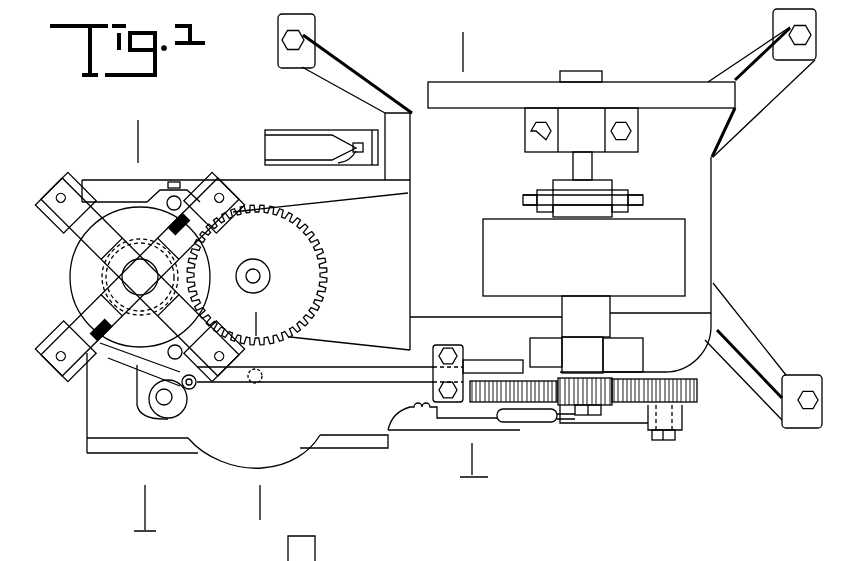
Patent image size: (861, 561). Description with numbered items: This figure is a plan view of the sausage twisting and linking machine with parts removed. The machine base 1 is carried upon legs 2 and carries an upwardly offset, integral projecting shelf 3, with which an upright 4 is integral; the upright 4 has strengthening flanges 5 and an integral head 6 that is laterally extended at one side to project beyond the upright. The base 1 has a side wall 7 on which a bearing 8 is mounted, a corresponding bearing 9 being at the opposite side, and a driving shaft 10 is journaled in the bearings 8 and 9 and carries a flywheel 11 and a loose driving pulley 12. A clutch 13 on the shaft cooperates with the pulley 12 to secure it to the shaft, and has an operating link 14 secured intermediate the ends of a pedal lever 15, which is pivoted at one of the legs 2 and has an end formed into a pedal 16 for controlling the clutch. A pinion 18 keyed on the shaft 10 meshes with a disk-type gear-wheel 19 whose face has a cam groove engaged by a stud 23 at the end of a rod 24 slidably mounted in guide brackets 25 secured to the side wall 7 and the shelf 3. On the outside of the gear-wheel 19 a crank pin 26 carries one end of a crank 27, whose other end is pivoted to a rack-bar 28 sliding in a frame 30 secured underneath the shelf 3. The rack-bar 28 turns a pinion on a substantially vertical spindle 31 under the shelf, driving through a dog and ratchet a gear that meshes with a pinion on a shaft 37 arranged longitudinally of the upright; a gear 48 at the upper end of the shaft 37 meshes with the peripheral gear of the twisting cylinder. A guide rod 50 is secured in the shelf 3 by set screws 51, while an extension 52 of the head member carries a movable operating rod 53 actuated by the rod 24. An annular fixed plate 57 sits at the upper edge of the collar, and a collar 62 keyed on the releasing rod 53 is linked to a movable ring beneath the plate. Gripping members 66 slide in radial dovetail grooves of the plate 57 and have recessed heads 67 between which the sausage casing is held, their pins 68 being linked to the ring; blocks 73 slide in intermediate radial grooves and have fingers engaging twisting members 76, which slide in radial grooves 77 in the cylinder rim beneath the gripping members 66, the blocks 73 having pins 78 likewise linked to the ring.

The machine base 1 is at (235, 183).
The legs 2 is at (340, 83).
The shelf 3 is at (792, 340).
The upright 4 is at (380, 252).
The strengthening flanges 5 is at (144, 328).
The head 6 is at (254, 416).
The side wall 7 is at (700, 330).
The bearing 8 is at (593, 352).
The bearing 9 is at (588, 118).
The driving shaft 10 is at (585, 168).
The flywheel 11 is at (490, 97).
The driving pulley 12 is at (670, 232).
The clutch 13 is at (590, 210).
The operating link 14 is at (555, 200).
The pedal lever 15 is at (365, 148).
The pedal 16 is at (287, 142).
The pinion 18 is at (590, 423).
The gear-wheel 19 is at (698, 390).
The stud 23 is at (525, 428).
The rod 24 is at (357, 374).
The guide brackets 25 is at (453, 363).
The crank pin 26 is at (668, 446).
The crank 27 is at (625, 422).
The rack-bar 28 is at (443, 421).
The frame 30 is at (172, 449).
The spindle 31 is at (255, 379).
The shaft 37 is at (262, 276).
The gear 48 is at (297, 236).
The guide rod 50 is at (170, 186).
The set screws 51 is at (178, 182).
The extension 52 is at (145, 380).
The operating rod 53 is at (174, 395).
The annular fixed plate 57 is at (118, 217).
The collar 62 is at (160, 407).
The gripping members 66 is at (88, 228).
The recessed heads 67 is at (98, 263).
The pins 68 is at (67, 192).
The blocks 73 is at (238, 204).
The twisting members 76 is at (160, 250).
The radial grooves 77 is at (145, 258).
The pins 78 is at (210, 195).